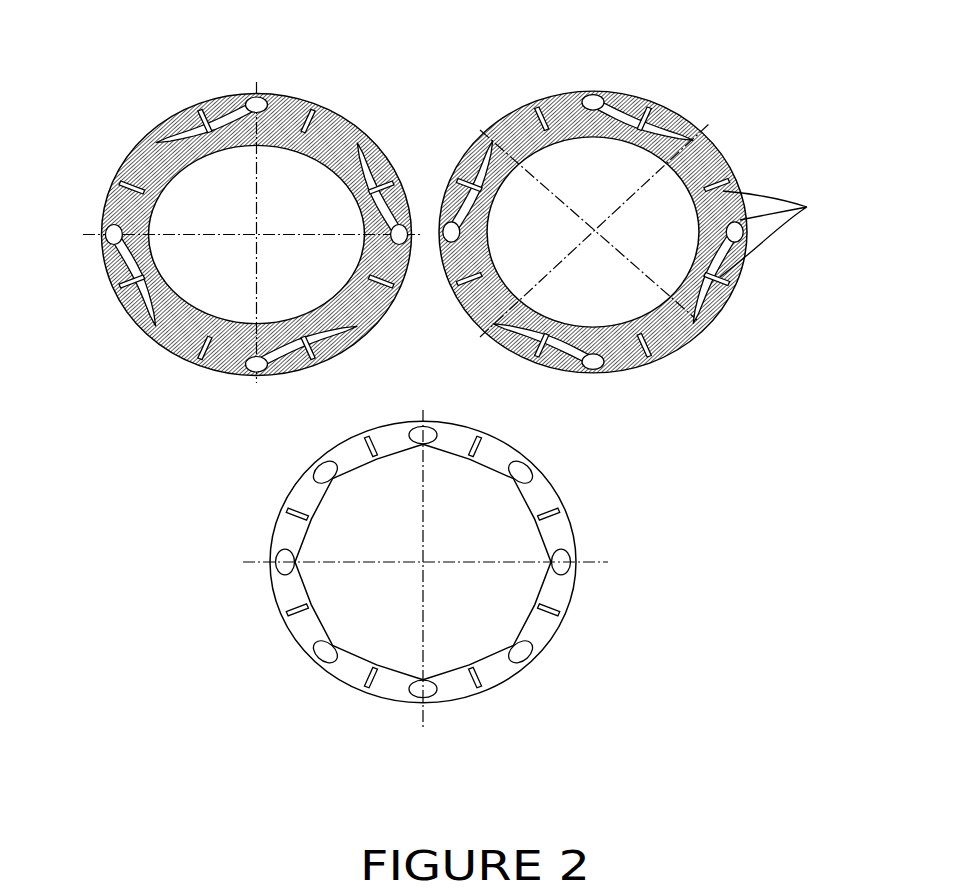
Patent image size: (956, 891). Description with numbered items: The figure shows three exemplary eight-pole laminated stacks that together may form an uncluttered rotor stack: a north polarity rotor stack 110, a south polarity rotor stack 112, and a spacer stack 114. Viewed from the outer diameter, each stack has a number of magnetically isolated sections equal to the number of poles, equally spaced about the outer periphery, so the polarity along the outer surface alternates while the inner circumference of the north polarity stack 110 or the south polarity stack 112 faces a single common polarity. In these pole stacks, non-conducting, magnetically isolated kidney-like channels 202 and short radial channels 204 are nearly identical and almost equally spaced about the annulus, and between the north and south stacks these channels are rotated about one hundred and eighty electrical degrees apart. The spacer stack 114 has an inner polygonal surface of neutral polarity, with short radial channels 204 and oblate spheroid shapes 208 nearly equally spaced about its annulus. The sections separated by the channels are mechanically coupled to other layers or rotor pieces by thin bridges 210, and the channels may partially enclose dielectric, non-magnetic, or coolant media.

The north polarity rotor stack 110 is at (203, 52).
The south polarity rotor stack 112 is at (703, 92).
The spacer stack 114 is at (576, 476).
The kidney-like channel 202 is at (365, 138).
The short radial channel 204 is at (317, 122).
The oblate spheroid shape 208 is at (573, 577).
The thin bridge 210 is at (103, 237).